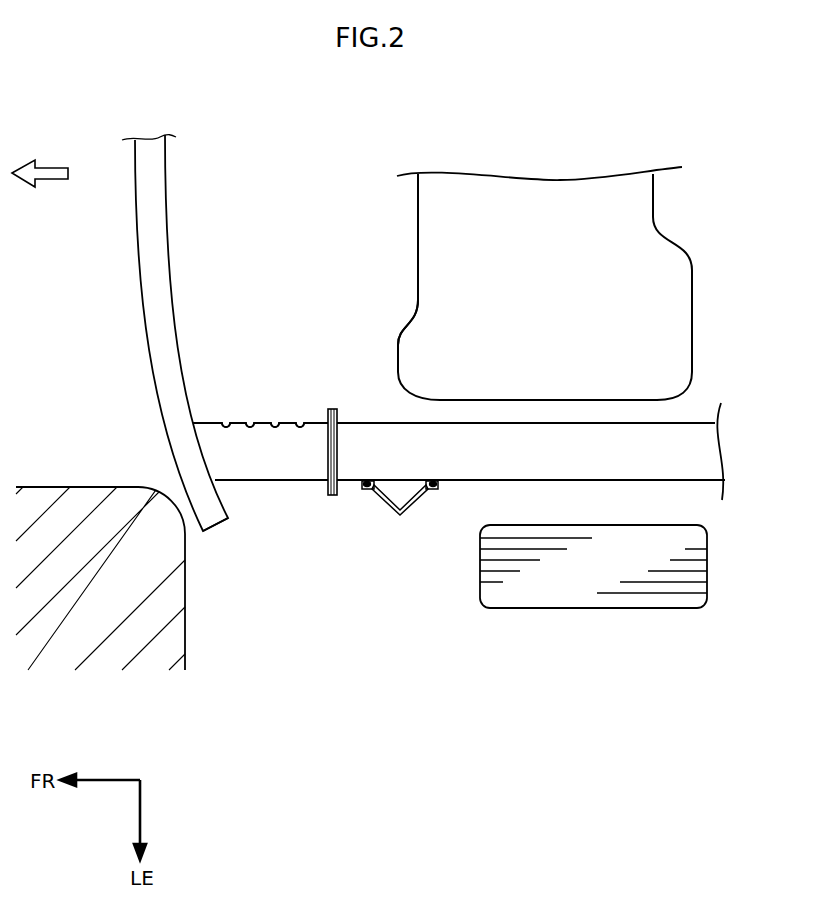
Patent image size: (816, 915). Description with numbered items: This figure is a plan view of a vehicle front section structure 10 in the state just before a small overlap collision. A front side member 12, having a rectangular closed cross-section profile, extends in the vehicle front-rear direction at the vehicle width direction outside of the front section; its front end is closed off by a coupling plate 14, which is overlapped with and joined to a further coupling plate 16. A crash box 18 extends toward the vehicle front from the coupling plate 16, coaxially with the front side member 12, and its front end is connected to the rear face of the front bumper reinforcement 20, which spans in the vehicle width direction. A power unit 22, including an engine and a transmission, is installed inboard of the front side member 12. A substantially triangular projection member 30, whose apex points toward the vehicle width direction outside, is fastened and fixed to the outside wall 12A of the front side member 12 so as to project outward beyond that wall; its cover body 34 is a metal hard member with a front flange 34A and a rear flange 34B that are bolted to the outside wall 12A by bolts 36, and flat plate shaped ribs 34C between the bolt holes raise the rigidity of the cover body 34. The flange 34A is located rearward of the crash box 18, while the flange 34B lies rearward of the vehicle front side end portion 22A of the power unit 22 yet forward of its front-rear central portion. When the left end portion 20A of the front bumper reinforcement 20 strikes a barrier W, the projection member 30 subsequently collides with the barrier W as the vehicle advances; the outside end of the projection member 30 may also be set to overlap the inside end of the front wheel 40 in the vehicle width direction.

The vehicle front section structure 10 is at (405, 620).
The front side member 12 is at (684, 424).
The outside wall 12A is at (660, 482).
The coupling plate 14 is at (340, 412).
The coupling plate 16 is at (325, 412).
The crash box 18 is at (237, 438).
The front bumper reinforcement 20 is at (137, 277).
The left end portion 20A is at (218, 537).
The power unit 22 is at (417, 240).
The vehicle front side end portion 22A is at (398, 353).
The projection member 30 is at (401, 547).
The cover body 34 is at (401, 547).
The flange 34A is at (360, 490).
The flange 34B is at (445, 484).
The rib 34C is at (432, 495).
The bolt 36 is at (368, 492).
The front wheel 40 is at (585, 606).
The barrier W is at (52, 487).